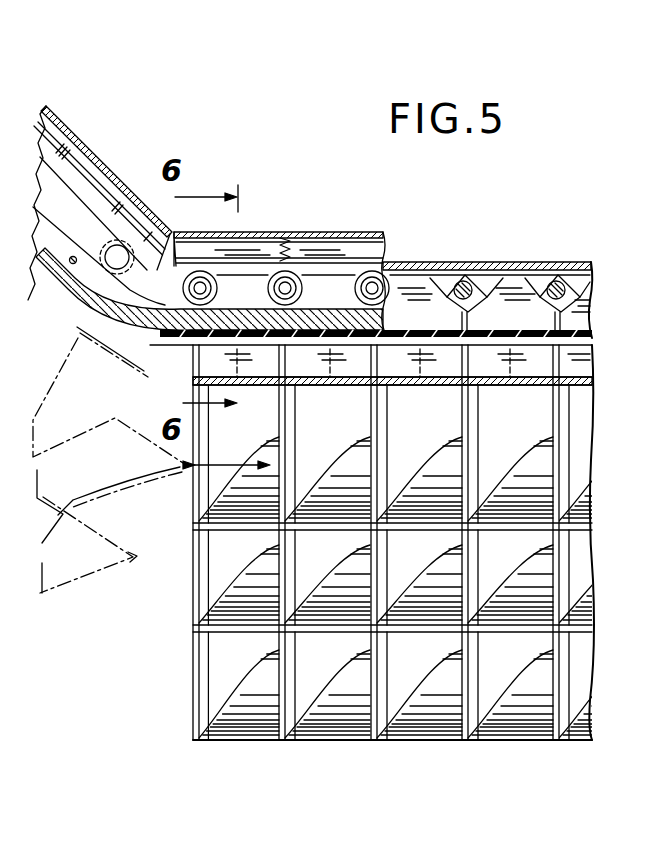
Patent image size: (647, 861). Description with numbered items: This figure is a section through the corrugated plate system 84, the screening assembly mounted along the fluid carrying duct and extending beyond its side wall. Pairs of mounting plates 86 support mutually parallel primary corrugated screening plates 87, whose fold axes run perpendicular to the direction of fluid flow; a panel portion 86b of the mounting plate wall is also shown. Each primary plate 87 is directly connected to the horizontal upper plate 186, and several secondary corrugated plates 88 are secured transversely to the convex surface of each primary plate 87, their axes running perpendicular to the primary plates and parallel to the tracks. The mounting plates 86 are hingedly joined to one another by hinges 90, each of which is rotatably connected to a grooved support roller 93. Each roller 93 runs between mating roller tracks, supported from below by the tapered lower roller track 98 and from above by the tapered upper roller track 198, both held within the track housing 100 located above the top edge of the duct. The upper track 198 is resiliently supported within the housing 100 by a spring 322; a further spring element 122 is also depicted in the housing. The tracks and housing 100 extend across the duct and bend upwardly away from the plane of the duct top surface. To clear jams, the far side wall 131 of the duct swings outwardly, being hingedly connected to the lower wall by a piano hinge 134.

The corrugated plate system 84 is at (603, 260).
The mounting plates 86 is at (414, 273).
The rail wall panel section 86b is at (507, 274).
The primary corrugated plates 87 is at (122, 392).
The secondary corrugated plates 88 is at (138, 480).
The hinges 90 is at (465, 272).
The support roller 93 is at (131, 271).
The lower roller track 98 is at (92, 283).
The track housing 100 is at (318, 222).
The spring 122 is at (297, 233).
The far side wall 131 is at (192, 680).
The piano hinge 134 is at (198, 742).
The horizontal upper plate 186 is at (568, 376).
The upper roller track 198 is at (384, 250).
The spring 322 is at (184, 210).